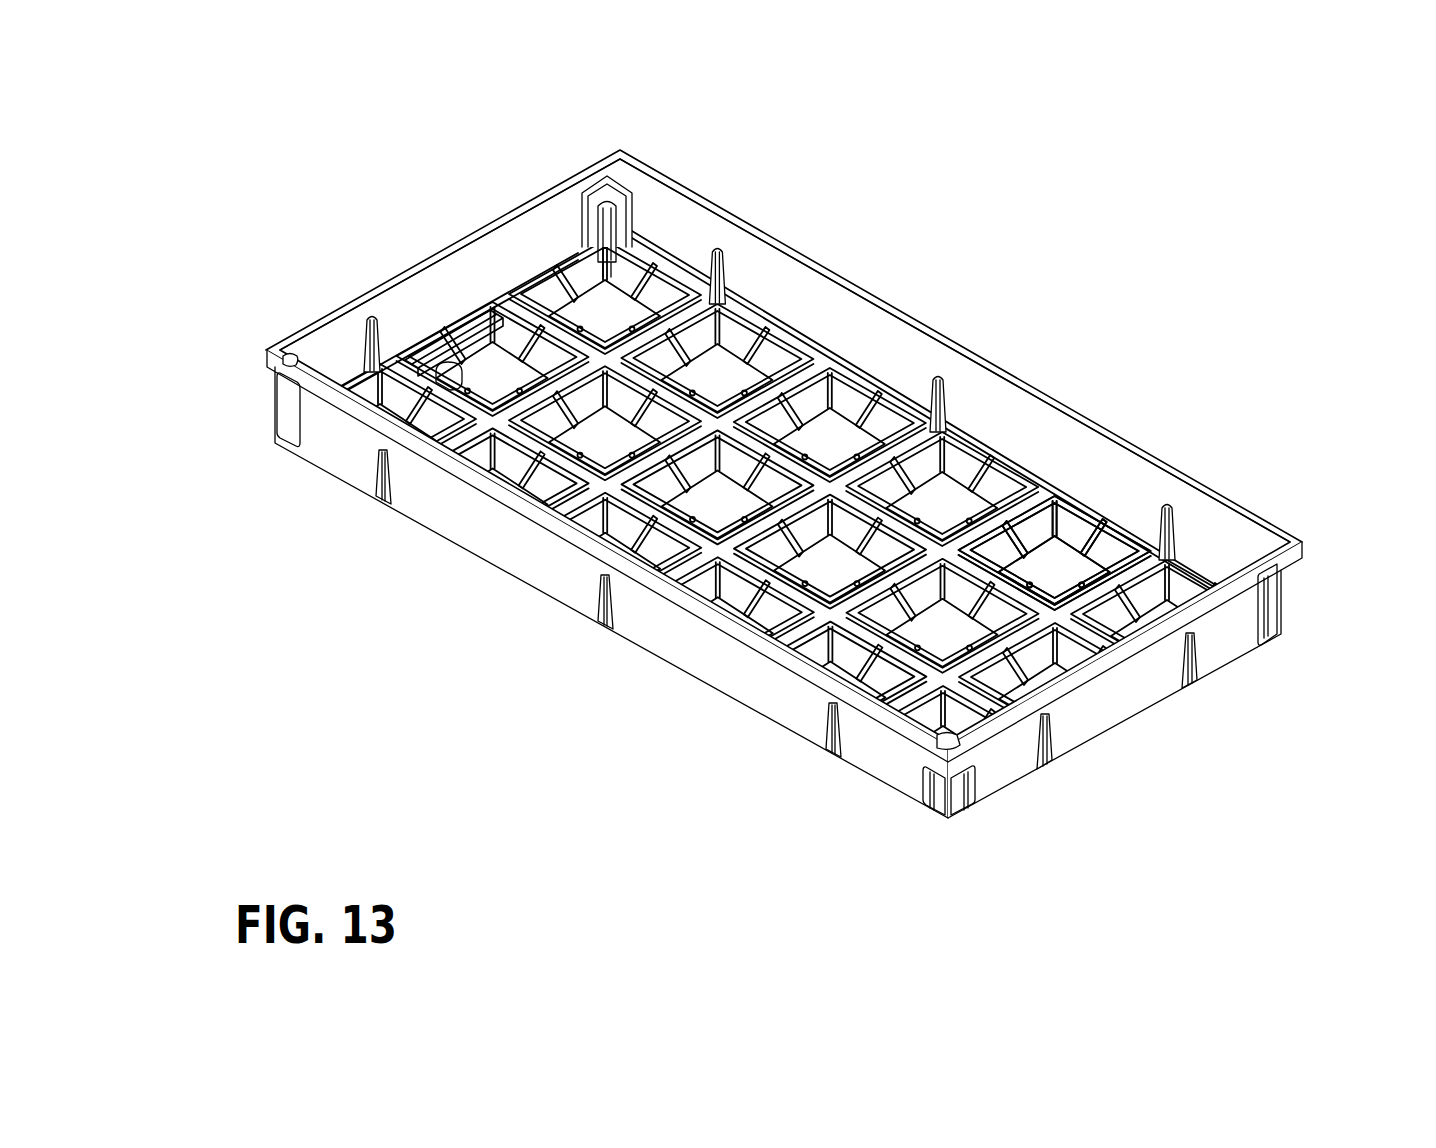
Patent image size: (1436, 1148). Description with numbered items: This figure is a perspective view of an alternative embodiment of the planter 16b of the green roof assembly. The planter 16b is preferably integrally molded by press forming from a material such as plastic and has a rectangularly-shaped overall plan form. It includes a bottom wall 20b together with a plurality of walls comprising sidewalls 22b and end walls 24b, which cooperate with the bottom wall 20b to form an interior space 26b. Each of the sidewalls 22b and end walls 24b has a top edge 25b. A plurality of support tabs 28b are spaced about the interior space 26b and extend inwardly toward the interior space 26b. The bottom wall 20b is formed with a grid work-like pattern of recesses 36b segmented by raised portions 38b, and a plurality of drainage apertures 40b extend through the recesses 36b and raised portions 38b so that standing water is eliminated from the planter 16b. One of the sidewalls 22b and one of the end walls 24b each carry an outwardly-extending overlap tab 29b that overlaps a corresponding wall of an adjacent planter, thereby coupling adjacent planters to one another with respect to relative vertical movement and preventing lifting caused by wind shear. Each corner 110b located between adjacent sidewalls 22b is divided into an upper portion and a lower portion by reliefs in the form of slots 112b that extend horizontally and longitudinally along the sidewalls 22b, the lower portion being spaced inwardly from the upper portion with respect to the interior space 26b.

The planter 16b is at (938, 262).
The bottom wall 20b is at (1093, 575).
The sidewall 22b is at (514, 542).
The end wall 24b is at (1213, 647).
The top edge 25b is at (727, 609).
The interior space 26b is at (685, 236).
The support tab 28b is at (712, 283).
The overlap tab 29b is at (1117, 523).
The recess 36b is at (1100, 553).
The raised portion 38b is at (1022, 490).
The drainage aperture 40b is at (978, 464).
The corner 110b is at (283, 405).
The slot 112b is at (621, 188).